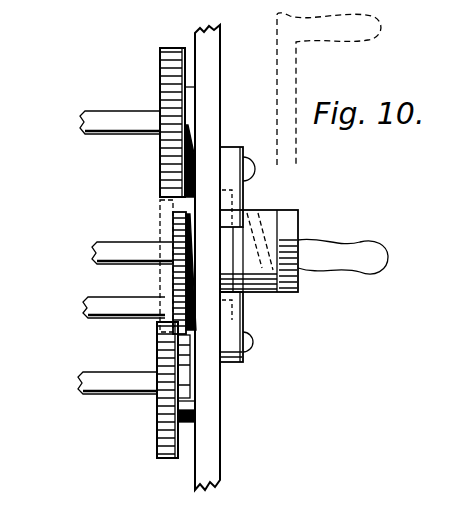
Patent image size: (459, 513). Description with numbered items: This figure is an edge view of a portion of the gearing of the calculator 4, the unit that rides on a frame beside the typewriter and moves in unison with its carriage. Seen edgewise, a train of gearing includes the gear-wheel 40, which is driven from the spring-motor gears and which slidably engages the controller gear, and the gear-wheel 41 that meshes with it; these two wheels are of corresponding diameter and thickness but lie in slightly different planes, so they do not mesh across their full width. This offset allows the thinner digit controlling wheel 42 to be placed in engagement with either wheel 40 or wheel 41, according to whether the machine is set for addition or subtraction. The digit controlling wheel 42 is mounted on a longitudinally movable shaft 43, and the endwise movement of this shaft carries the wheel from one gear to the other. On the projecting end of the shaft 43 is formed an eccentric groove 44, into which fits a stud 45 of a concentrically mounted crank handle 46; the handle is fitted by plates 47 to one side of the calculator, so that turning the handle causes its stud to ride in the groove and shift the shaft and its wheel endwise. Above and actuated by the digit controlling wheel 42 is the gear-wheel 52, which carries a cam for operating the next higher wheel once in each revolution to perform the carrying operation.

The calculator 4 is at (202, 269).
The gear-wheel 40 is at (128, 407).
The gear-wheel 41 is at (183, 375).
The digit controlling wheel 42 is at (172, 198).
The longitudinally movable shaft 43 is at (128, 243).
The eccentric groove 44 is at (262, 240).
The stud 45 is at (255, 222).
The crank handle 46 is at (332, 155).
The plate 47 is at (228, 151).
The gear-wheel 52 is at (160, 66).